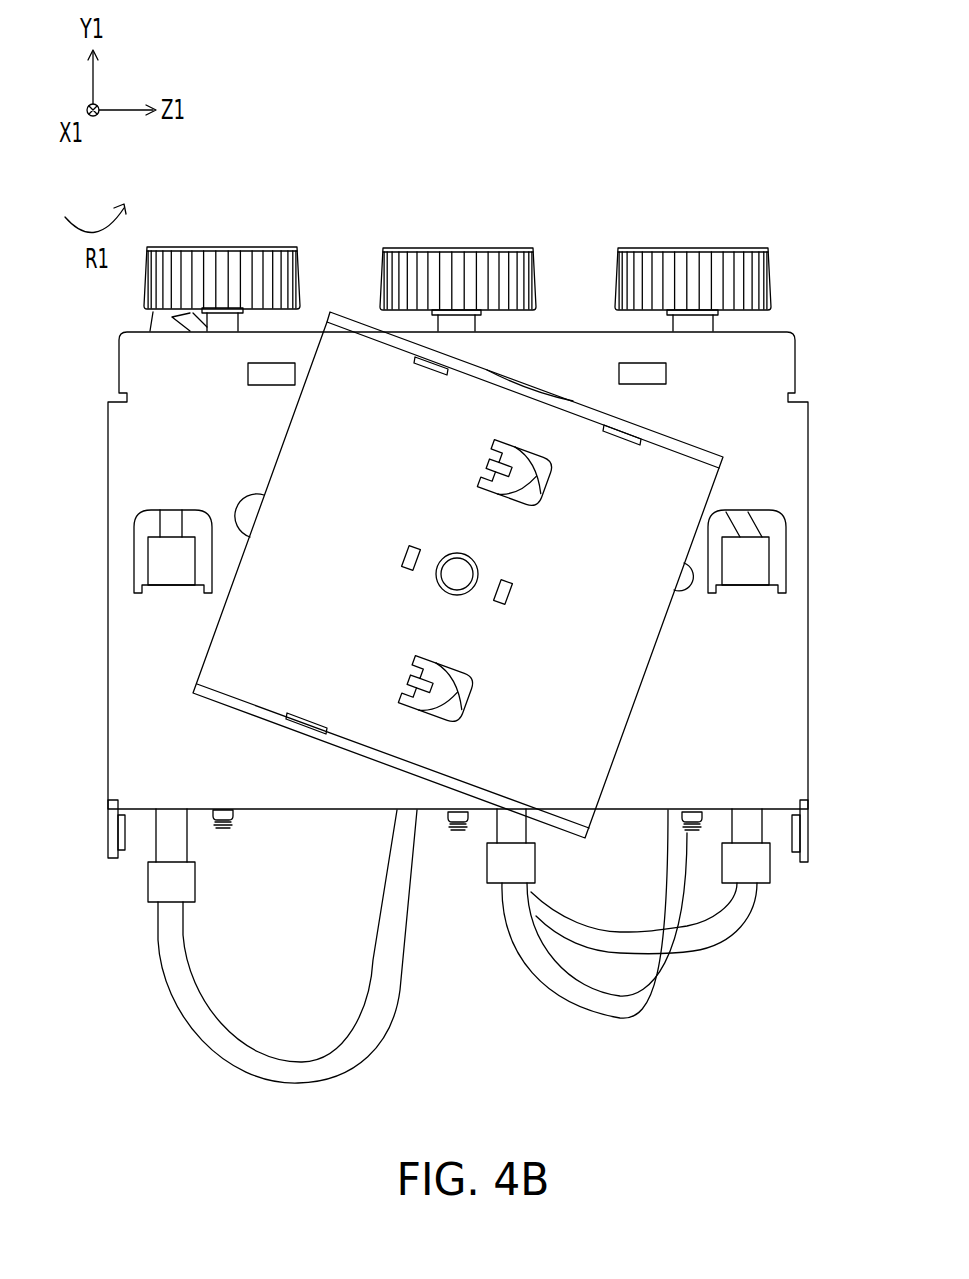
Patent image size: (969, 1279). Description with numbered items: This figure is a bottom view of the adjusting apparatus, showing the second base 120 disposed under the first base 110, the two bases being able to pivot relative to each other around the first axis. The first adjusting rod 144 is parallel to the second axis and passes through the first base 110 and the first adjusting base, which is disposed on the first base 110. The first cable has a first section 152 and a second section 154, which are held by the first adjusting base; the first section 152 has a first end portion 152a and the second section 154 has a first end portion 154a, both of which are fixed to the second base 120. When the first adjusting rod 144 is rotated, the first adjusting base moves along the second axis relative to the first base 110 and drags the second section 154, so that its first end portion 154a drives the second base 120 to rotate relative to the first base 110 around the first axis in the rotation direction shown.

The first base 110 is at (137, 628).
The second base 120 is at (298, 462).
The first adjusting rod 144 is at (738, 248).
The first section 152 is at (730, 920).
The first end portion 152a is at (433, 692).
The second section 154 is at (747, 520).
The first end portion 154a is at (507, 455).